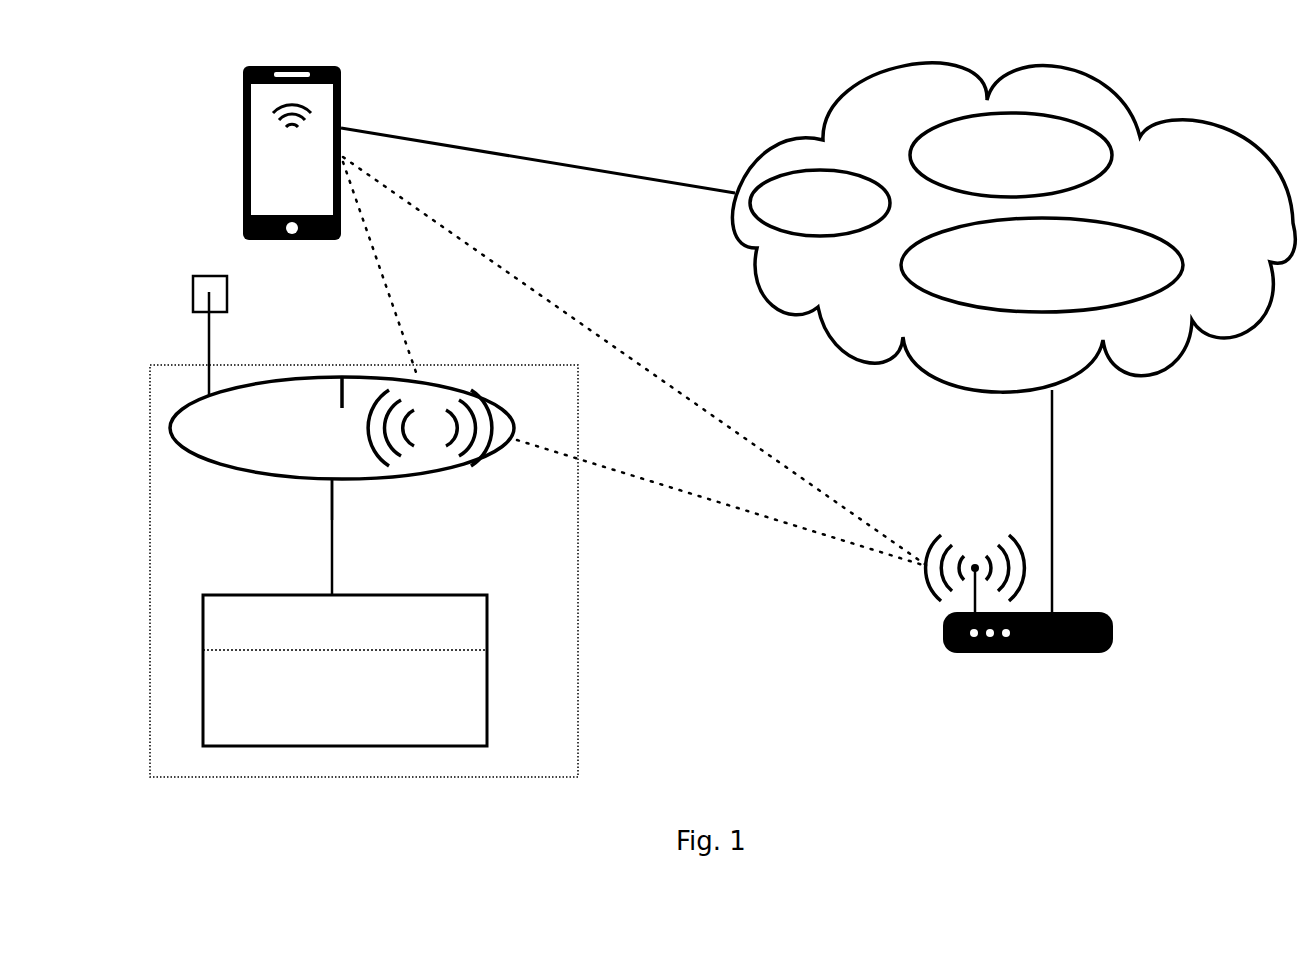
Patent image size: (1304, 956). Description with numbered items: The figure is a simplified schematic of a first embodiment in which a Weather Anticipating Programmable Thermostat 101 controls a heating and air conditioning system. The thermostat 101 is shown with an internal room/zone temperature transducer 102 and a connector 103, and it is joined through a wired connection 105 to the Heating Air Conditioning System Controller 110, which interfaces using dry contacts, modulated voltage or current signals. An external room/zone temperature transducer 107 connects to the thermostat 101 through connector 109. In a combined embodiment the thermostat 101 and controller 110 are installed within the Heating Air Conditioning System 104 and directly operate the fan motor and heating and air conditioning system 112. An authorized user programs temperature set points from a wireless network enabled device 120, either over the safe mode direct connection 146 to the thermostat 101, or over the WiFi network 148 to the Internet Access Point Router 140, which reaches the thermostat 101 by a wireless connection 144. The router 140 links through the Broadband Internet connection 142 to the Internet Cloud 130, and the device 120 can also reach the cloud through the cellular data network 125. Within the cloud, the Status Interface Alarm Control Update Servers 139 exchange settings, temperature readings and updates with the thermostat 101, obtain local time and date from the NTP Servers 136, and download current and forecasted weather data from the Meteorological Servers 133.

The Weather Anticipating Programmable Thermostat 101 is at (495, 400).
The internal room/zone temperature transducer 102 is at (334, 412).
The connector 103 is at (322, 470).
The Heating Air Conditioning System 104 is at (579, 688).
The wired connection 105 is at (334, 536).
The external room/zone temperature transducer 107 is at (228, 283).
The connector 109 is at (212, 336).
The Heating Air Conditioning System Controller 110 is at (488, 602).
The fan motor and heating and air conditioning system 112 is at (488, 698).
The wireless network enabled device 120 is at (342, 68).
The cellular data network 125 is at (546, 168).
The Internet Cloud 130 is at (1140, 98).
The Meteorological Servers 133 is at (1111, 170).
The NTP Servers 136 is at (820, 238).
The Status Interface Alarm Control Update Servers 139 is at (1183, 278).
The Internet Access Point Router 140 is at (1113, 614).
The Broadband Internet connection 142 is at (1053, 493).
The wireless connection 144 is at (672, 489).
The safe mode direct connection 146 is at (392, 308).
The WiFi network 148 is at (608, 350).